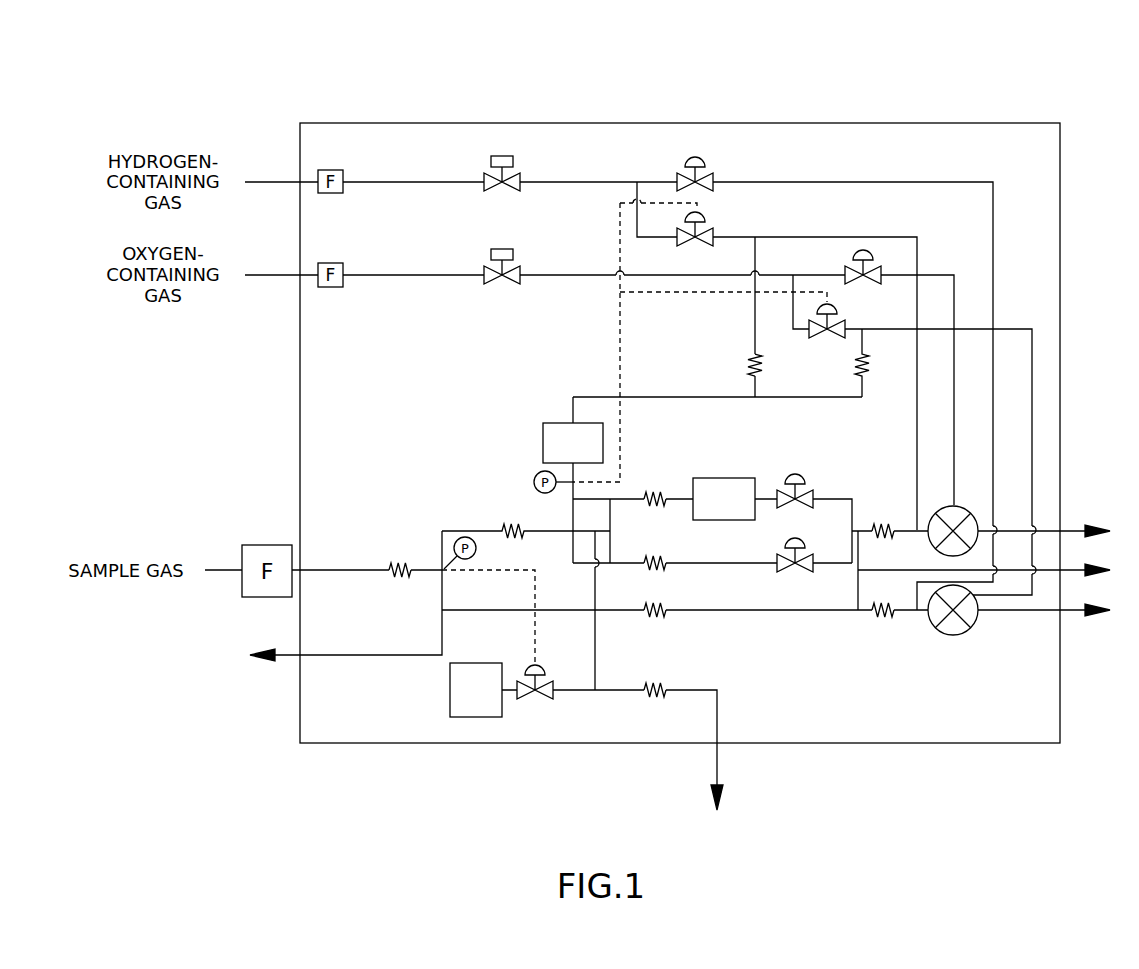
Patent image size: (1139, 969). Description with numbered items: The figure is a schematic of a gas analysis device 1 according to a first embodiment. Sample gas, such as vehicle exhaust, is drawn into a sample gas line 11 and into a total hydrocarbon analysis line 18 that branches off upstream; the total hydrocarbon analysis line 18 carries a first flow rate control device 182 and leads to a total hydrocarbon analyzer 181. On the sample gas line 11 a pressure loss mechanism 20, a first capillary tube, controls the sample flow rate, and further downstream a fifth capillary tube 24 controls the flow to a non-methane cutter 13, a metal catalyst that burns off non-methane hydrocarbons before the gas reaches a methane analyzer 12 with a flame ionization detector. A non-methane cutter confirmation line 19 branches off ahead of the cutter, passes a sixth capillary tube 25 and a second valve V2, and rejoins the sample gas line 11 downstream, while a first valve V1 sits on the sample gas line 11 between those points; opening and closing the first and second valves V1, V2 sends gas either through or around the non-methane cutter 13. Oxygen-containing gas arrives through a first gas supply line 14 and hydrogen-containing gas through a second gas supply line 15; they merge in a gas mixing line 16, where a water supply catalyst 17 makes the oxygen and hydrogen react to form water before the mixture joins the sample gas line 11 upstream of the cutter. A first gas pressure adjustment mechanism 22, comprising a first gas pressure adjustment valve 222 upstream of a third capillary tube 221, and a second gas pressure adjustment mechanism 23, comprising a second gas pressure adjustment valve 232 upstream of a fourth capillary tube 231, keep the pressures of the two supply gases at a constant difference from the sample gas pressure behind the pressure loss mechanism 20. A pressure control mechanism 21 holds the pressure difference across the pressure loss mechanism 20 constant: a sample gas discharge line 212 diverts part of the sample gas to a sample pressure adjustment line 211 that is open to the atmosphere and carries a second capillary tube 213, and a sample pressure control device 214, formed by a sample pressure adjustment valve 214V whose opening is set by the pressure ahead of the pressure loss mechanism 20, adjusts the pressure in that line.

The gas analysis device 1 is at (779, 104).
The sample gas line 11 is at (680, 497).
The methane analyzer 12 is at (962, 507).
The non-methane cutter 13 is at (720, 478).
The first gas supply line 14 is at (862, 392).
The second gas supply line 15 is at (755, 334).
The gas mixing line 16 is at (598, 397).
The water supply catalyst 17 is at (553, 423).
The total hydrocarbon analysis line 18 is at (768, 615).
The non-methane cutter confirmation line 19 is at (724, 563).
The pressure loss mechanism 20 is at (508, 524).
The pressure control mechanism 21 is at (572, 718).
The first gas pressure adjustment mechanism 22 is at (877, 222).
The second gas pressure adjustment mechanism 23 is at (753, 218).
The fifth capillary tube 24 is at (650, 495).
The sixth capillary tube 25 is at (655, 557).
The total hydrocarbon analyzer 181 is at (953, 636).
The first flow rate control device 182 is at (655, 617).
The sample pressure adjustment line 211 is at (610, 688).
The sample gas discharge line 212 is at (601, 578).
The second capillary tube 213 is at (648, 695).
The sample pressure control device 214 is at (520, 713).
The sample pressure adjustment valve 214V is at (548, 680).
The third capillary tube 221 is at (862, 365).
The first gas pressure adjustment valve 222 is at (838, 324).
The fourth capillary tube 231 is at (755, 372).
The second gas pressure adjustment valve 232 is at (710, 228).
The first valve V1 is at (798, 473).
The second valve V2 is at (796, 575).